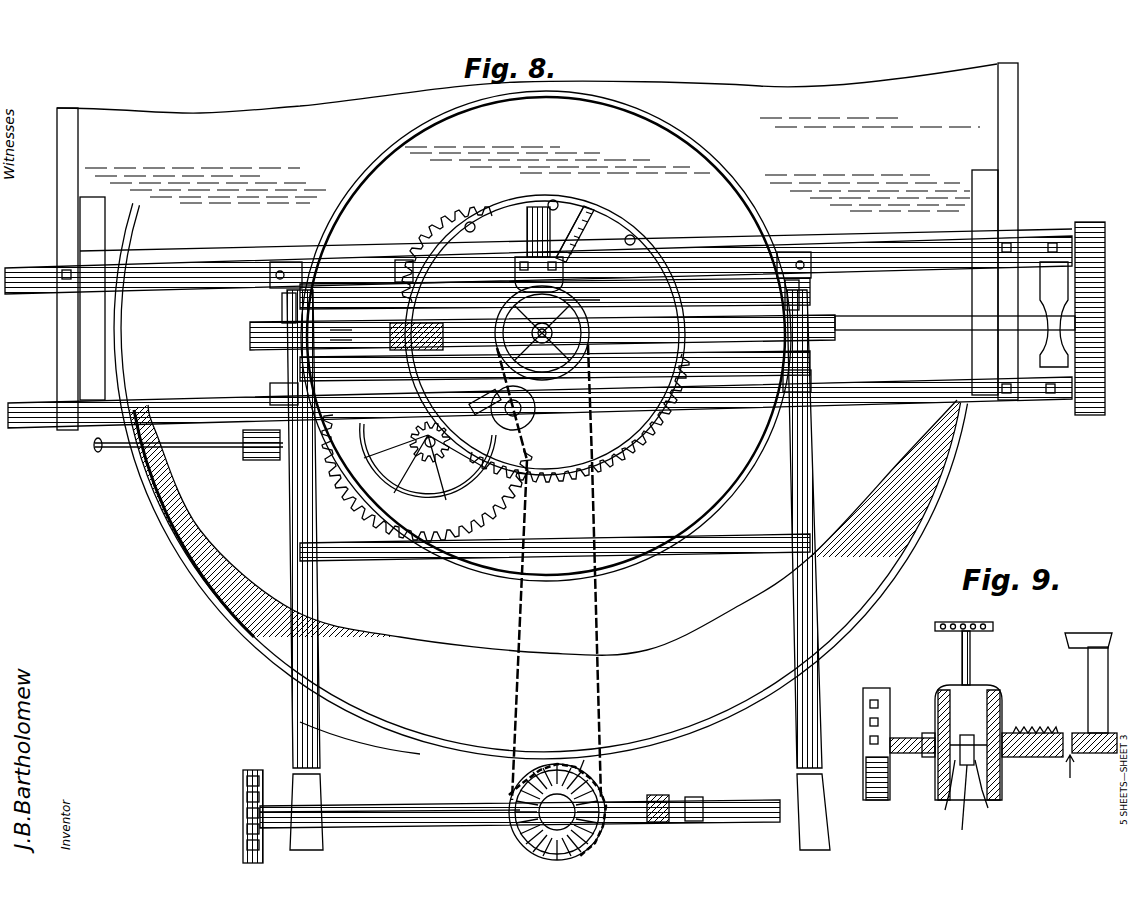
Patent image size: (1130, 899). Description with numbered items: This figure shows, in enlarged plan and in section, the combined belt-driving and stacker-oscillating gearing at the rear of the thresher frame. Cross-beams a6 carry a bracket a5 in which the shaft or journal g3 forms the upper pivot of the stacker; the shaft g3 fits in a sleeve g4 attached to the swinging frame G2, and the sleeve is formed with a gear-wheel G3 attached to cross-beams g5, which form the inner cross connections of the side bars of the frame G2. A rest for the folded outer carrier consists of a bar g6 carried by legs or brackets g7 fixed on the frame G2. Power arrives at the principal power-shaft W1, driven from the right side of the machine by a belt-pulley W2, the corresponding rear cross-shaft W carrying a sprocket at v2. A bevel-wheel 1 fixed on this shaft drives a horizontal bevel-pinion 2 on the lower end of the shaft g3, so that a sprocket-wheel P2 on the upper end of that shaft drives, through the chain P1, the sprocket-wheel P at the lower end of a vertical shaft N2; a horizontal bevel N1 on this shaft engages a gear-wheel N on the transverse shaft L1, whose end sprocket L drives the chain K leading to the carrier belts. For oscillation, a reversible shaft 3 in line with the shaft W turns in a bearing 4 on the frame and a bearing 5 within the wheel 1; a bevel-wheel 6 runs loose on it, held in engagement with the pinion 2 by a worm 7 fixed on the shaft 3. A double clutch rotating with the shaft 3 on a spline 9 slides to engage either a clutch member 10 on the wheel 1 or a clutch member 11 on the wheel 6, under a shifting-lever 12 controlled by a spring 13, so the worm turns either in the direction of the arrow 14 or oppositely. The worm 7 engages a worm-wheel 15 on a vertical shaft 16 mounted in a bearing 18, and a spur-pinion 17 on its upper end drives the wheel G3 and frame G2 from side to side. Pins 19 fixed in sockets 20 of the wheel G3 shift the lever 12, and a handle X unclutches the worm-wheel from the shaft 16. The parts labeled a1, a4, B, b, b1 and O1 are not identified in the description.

In FIG. 8, the table top a1 is at (527, 137).
In FIG. 8, the frame post a4 is at (57, 172).
In FIG. 8, the bracket a5 is at (530, 272).
In FIG. 8, the cross-beams a6 is at (538, 328).
In FIG. 9, the cross-beams a6 is at (1080, 632).
In FIG. 8, the shaft or journal g3 is at (512, 318).
In FIG. 9, the shaft or journal g3 is at (971, 645).
In FIG. 8, the sleeve g4 is at (556, 326).
In FIG. 8, the cross-beams g5 is at (555, 329).
In FIG. 8, the bar g6 is at (252, 335).
In FIG. 8, the legs or brackets g7 is at (282, 366).
In FIG. 8, the frame G2 is at (293, 703).
In FIG. 8, the gear-wheel G3 is at (547, 338).
In FIG. 8, the drum B is at (540, 481).
In FIG. 8, the drum rim b is at (372, 722).
In FIG. 8, the drum head b1 is at (432, 598).
In FIG. 8, the sprocket-wheel P is at (580, 768).
In FIG. 8, the chain P1 is at (548, 572).
In FIG. 8, the sprocket-wheel P2 is at (568, 300).
In FIG. 9, the sprocket-wheel P2 is at (964, 622).
In FIG. 8, the gear-wheel N is at (600, 784).
In FIG. 8, the horizontal bevel N1 is at (512, 795).
In FIG. 8, the vertical shaft N2 is at (553, 770).
In FIG. 8, the driving-sprocket L is at (245, 803).
In FIG. 8, the shaft L1 is at (445, 808).
In FIG. 8, the chain K is at (245, 830).
In FIG. 8, the bearing O1 is at (497, 822).
In FIG. 8, the handle X is at (180, 456).
In FIG. 9, the rear cross-shaft W is at (900, 738).
In FIG. 8, the principal power-shaft W1 is at (955, 314).
In FIG. 8, the belt-pulley W2 is at (1086, 412).
In FIG. 9, the sprocket v2 is at (874, 686).
In FIG. 8, the bevel-wheel 1 is at (596, 318).
In FIG. 9, the bevel-wheel 1 is at (936, 700).
In FIG. 9, the horizontal bevel-pinion 2 is at (944, 688).
In FIG. 8, the reversible shaft 3 is at (372, 338).
In FIG. 9, the reversible shaft 3 is at (1060, 732).
In FIG. 8, the bearing 4 is at (332, 322).
In FIG. 9, the bearing 5 is at (928, 758).
In FIG. 8, the bevel-wheel 6 is at (444, 330).
In FIG. 9, the bevel-wheel 6 is at (998, 704).
In FIG. 8, the worm 7 is at (452, 340).
In FIG. 9, the worm 7 is at (1034, 726).
In FIG. 9, the spline 9 is at (966, 735).
In FIG. 9, the clutch member 10 is at (946, 793).
In FIG. 9, the clutch member 11 is at (986, 792).
In FIG. 8, the shifting-lever 12 is at (578, 232).
In FIG. 9, the shifting-lever 12 is at (961, 805).
In FIG. 8, the spring 13 is at (592, 226).
In FIG. 9, the arrow 14 is at (1072, 775).
In FIG. 8, the worm-wheel 15 is at (478, 512).
In FIG. 8, the vertical shaft 16 is at (428, 460).
In FIG. 8, the spur-pinion 17 is at (425, 467).
In FIG. 8, the bearing 18 is at (429, 438).
In FIG. 8, the pins 19 is at (396, 270).
In FIG. 8, the sockets 20 is at (468, 224).